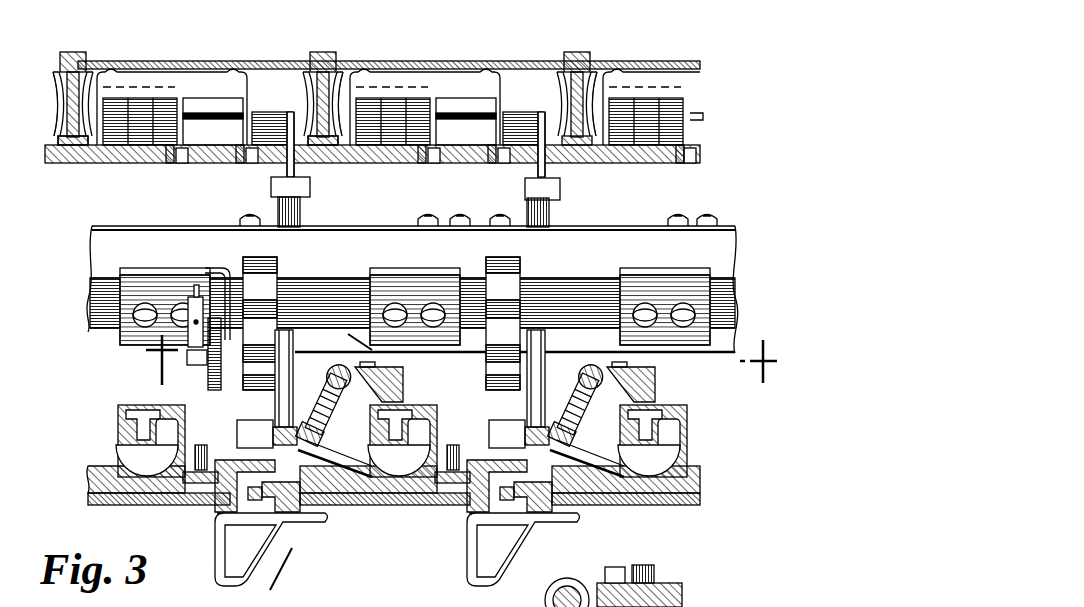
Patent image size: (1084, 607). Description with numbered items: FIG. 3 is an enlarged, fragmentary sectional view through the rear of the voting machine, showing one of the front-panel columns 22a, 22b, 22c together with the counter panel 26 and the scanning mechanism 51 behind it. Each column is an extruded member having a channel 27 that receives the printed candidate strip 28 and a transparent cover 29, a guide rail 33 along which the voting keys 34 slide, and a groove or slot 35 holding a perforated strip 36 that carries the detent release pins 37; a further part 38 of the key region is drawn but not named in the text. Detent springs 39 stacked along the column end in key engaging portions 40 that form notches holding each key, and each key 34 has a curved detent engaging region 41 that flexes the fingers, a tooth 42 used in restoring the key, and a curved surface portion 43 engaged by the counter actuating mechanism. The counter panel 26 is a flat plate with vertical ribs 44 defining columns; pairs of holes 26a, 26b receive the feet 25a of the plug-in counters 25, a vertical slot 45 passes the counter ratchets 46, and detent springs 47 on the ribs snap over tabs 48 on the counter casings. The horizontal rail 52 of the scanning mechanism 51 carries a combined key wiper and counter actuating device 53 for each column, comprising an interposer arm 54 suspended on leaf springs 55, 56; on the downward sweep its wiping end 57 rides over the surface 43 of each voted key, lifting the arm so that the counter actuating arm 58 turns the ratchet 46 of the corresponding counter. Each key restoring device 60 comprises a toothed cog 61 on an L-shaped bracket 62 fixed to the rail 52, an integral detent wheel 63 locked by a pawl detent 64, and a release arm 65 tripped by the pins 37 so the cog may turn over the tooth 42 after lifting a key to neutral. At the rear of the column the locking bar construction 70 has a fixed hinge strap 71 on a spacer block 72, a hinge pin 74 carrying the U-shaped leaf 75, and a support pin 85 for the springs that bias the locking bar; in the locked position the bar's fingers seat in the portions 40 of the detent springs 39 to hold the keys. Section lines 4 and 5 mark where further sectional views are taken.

The section line 4- 4 is at (460, 362).
The section line 5- 5 is at (321, 459).
The column 22a is at (84, 513).
The column 22b is at (374, 565).
The column 22c is at (685, 521).
The counter 25 is at (190, 85).
The feet 25a is at (182, 168).
The counter panel 26 is at (55, 163).
The hole 26a is at (170, 165).
The hole 26b is at (240, 165).
The channel 27 is at (300, 512).
The candidate strip 28 is at (338, 512).
The transparent cover 29 is at (395, 505).
The guide rail 33 is at (228, 533).
The voting key 34 is at (220, 588).
The groove or slot 35 is at (467, 460).
The perforated strip 36 is at (170, 498).
The detent release pin 37 is at (195, 452).
The hook tip 38 is at (284, 528).
The detent spring 39 is at (350, 470).
The key engaging portion 40 is at (318, 445).
The detent engaging region 41 is at (312, 420).
The tooth 42 is at (237, 432).
The curved surface portion 43 is at (275, 438).
The vertical rib 44 is at (73, 52).
The vertical slot 45 is at (295, 163).
The counter operating ratchet 46 is at (294, 177).
The detent spring 47 is at (65, 97).
The tab 48 is at (63, 142).
The scanning mechanism 51 is at (81, 311).
The horizontal rail 52 is at (90, 240).
The combined key wiper and counter actuating device 53 is at (591, 223).
The interposer arm 54 is at (300, 212).
The leaf spring 55 is at (352, 226).
The leaf spring 56 is at (324, 354).
The wiping end 57 is at (277, 405).
The counter actuating arm 58 is at (271, 187).
The key restoring device 60 is at (239, 255).
The toothed cog 61 is at (270, 278).
The L-shaped bracket 62 is at (137, 268).
The toothed detent wheel 63 is at (222, 390).
The detent 64 is at (228, 272).
The detent release arm 65 is at (196, 295).
The locking bar construction 70 is at (331, 367).
The hinge strap 71 is at (398, 368).
The spacer block 72 is at (403, 392).
The hinge pin 74 is at (556, 590).
The U-shaped leaf 75 is at (545, 598).
The support pin 85 is at (479, 597).